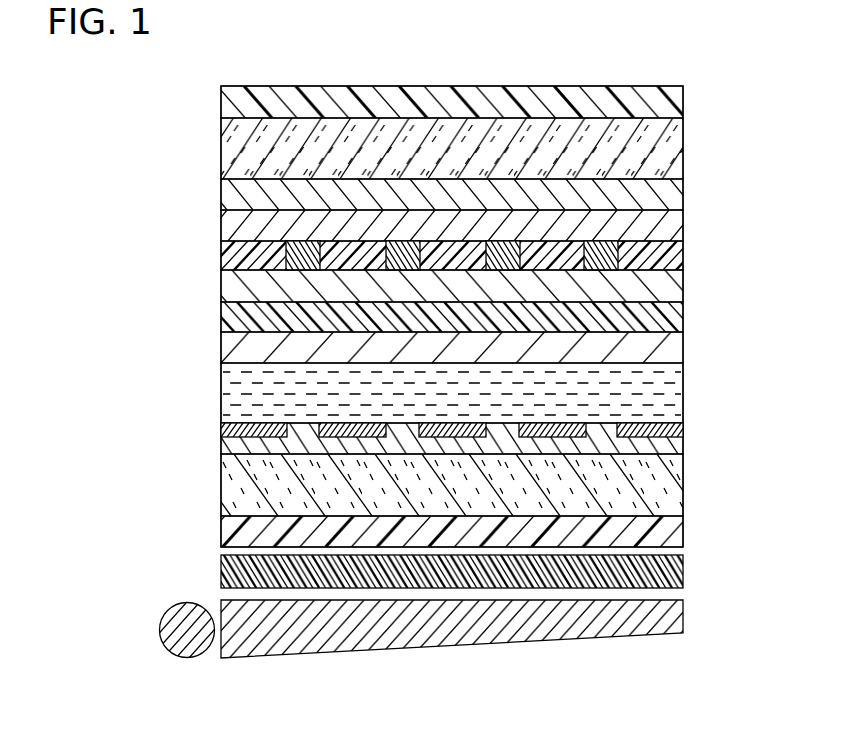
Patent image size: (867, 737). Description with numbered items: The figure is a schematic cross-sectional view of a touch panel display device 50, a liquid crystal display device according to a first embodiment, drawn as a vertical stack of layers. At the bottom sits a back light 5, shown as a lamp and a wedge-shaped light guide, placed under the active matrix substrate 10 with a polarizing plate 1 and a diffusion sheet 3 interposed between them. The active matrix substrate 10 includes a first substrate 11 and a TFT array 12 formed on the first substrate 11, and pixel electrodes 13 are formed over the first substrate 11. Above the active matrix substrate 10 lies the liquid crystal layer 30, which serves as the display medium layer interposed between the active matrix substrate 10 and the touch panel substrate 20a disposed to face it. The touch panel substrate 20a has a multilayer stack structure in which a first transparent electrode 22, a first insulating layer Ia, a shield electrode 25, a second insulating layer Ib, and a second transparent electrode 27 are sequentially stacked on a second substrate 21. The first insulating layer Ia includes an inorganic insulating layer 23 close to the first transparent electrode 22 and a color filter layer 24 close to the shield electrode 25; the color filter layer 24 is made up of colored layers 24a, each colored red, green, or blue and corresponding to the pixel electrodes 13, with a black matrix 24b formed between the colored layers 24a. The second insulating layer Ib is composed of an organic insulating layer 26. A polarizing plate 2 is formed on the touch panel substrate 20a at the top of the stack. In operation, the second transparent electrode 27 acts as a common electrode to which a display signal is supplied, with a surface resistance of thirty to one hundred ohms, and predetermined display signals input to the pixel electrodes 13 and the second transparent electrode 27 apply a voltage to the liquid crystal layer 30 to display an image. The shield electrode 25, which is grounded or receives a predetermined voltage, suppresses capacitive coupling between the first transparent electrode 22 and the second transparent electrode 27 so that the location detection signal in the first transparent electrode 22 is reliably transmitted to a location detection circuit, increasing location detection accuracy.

The polarizing plate 1 is at (674, 538).
The polarizing plate 2 is at (674, 105).
The diffusion sheet 3 is at (674, 574).
The back light 5 is at (683, 638).
The active matrix substrate 10 is at (433, 467).
The first substrate 11 is at (674, 488).
The TFT array 12 is at (458, 437).
The pixel electrodes 13 is at (676, 433).
The touch panel substrate 20a is at (446, 244).
The second substrate 21 is at (674, 147).
The first transparent electrode 22 is at (674, 197).
The inorganic insulating layer 23 is at (674, 227).
The color filter layer 24 is at (519, 266).
The colored layers 24a is at (678, 252).
The black matrix 24b is at (617, 262).
The shield electrode 25 is at (674, 304).
The organic insulating layer 26 is at (674, 329).
The second transparent electrode 27 is at (674, 352).
The liquid crystal layer 30 is at (220, 370).
The touch panel display device 50 is at (252, 72).
The first insulating layer Ia is at (493, 251).
The second insulating layer Ib is at (460, 322).